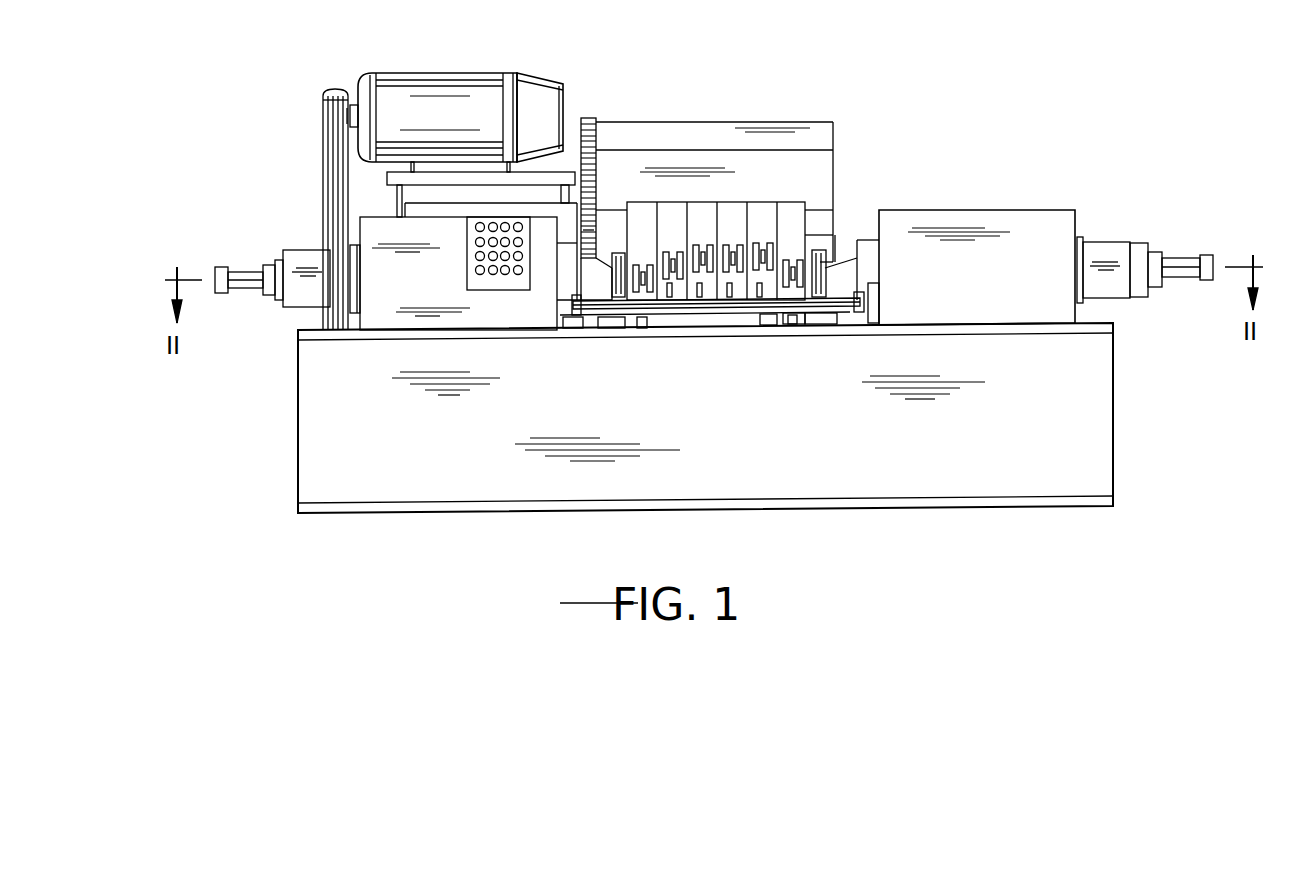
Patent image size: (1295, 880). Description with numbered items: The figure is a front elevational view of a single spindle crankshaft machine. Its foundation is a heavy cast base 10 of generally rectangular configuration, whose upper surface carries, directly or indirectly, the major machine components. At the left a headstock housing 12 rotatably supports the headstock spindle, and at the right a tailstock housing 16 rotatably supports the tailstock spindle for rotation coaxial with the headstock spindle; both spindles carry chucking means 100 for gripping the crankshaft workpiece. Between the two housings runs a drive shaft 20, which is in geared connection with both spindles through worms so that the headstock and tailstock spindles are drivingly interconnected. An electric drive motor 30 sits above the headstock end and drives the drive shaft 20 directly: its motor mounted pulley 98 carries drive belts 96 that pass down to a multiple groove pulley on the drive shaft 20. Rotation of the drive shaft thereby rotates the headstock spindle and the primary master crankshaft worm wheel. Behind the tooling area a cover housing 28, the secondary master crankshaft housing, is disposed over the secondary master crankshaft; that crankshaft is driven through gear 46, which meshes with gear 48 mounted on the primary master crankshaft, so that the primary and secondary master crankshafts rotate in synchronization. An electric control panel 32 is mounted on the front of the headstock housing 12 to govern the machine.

The base 10 is at (426, 458).
The headstock housing 12 is at (566, 272).
The tailstock housing 16 is at (965, 285).
The drive shaft 20 is at (710, 313).
The secondary master crankshaft housing 28 is at (800, 182).
The electric drive motor 30 is at (462, 122).
The electric control panel 32 is at (467, 265).
The gear 46 is at (588, 138).
The gear 48 is at (590, 233).
The drive belts 96 is at (323, 193).
The motor mounted pulley 98 is at (323, 114).
The chucking means 100 is at (863, 240).